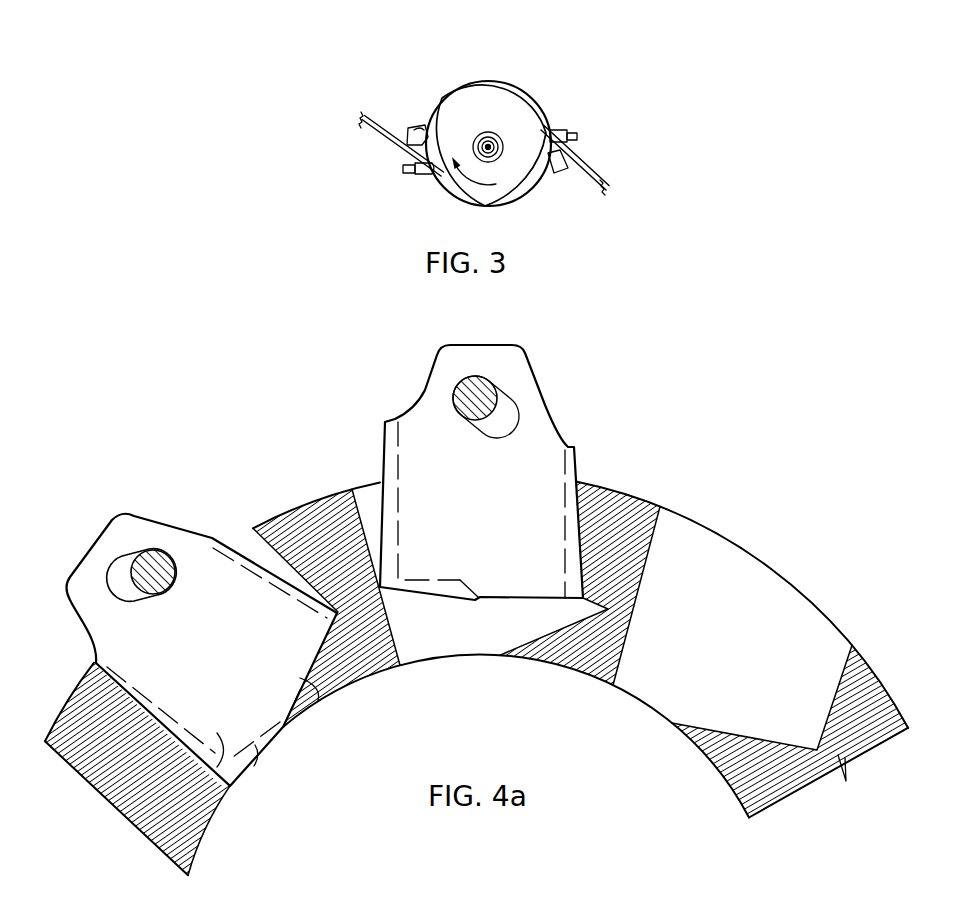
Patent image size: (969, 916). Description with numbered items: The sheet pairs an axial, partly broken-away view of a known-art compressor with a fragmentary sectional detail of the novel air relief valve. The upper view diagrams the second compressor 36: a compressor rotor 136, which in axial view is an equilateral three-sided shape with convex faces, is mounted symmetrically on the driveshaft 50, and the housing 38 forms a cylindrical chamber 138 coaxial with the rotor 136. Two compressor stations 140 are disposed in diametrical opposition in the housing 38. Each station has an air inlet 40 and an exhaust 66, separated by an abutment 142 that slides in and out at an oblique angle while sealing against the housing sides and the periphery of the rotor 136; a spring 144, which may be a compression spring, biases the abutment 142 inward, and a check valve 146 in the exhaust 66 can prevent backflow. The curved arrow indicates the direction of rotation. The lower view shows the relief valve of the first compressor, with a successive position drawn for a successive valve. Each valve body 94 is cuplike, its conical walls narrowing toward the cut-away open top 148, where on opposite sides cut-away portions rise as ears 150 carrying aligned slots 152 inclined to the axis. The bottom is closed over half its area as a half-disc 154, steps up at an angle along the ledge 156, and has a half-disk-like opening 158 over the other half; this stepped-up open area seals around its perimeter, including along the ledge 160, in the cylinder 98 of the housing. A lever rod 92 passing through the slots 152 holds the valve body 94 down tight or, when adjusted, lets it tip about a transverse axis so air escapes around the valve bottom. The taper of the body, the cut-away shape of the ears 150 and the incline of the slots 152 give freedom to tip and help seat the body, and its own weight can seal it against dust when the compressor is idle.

In FIG. 3, the second compressor 36 is at (426, 60).
In FIG. 3, the housing 38 is at (436, 121).
In FIG. 3, the air inlet 40 is at (560, 178).
In FIG. 3, the driveshaft 50 is at (490, 143).
In FIG. 3, the exhaust 66 is at (577, 137).
In FIG. 3, the compressor rotor 136 is at (467, 108).
In FIG. 3, the cylindrical chamber 138 is at (523, 107).
In FIG. 3, the compressor stations 140 is at (503, 151).
In FIG. 3, the abutment 142 is at (587, 162).
In FIG. 3, the spring 144 is at (619, 181).
In FIG. 3, the check valve 146 is at (545, 130).
In FIG. 4A, the lever rod 92 is at (162, 562).
In FIG. 4A, the valve body 94 is at (212, 781).
In FIG. 4A, the cylinder 98 is at (251, 535).
In FIG. 4A, the open top 148 is at (98, 638).
In FIG. 4A, the ears 150 is at (139, 548).
In FIG. 4A, the slots 152 is at (122, 563).
In FIG. 4A, the half-disc 154 is at (255, 758).
In FIG. 4A, the ledge 156 is at (287, 729).
In FIG. 4A, the half-disk-like opening 158 is at (316, 700).
In FIG. 4A, the ledge 160 is at (293, 703).